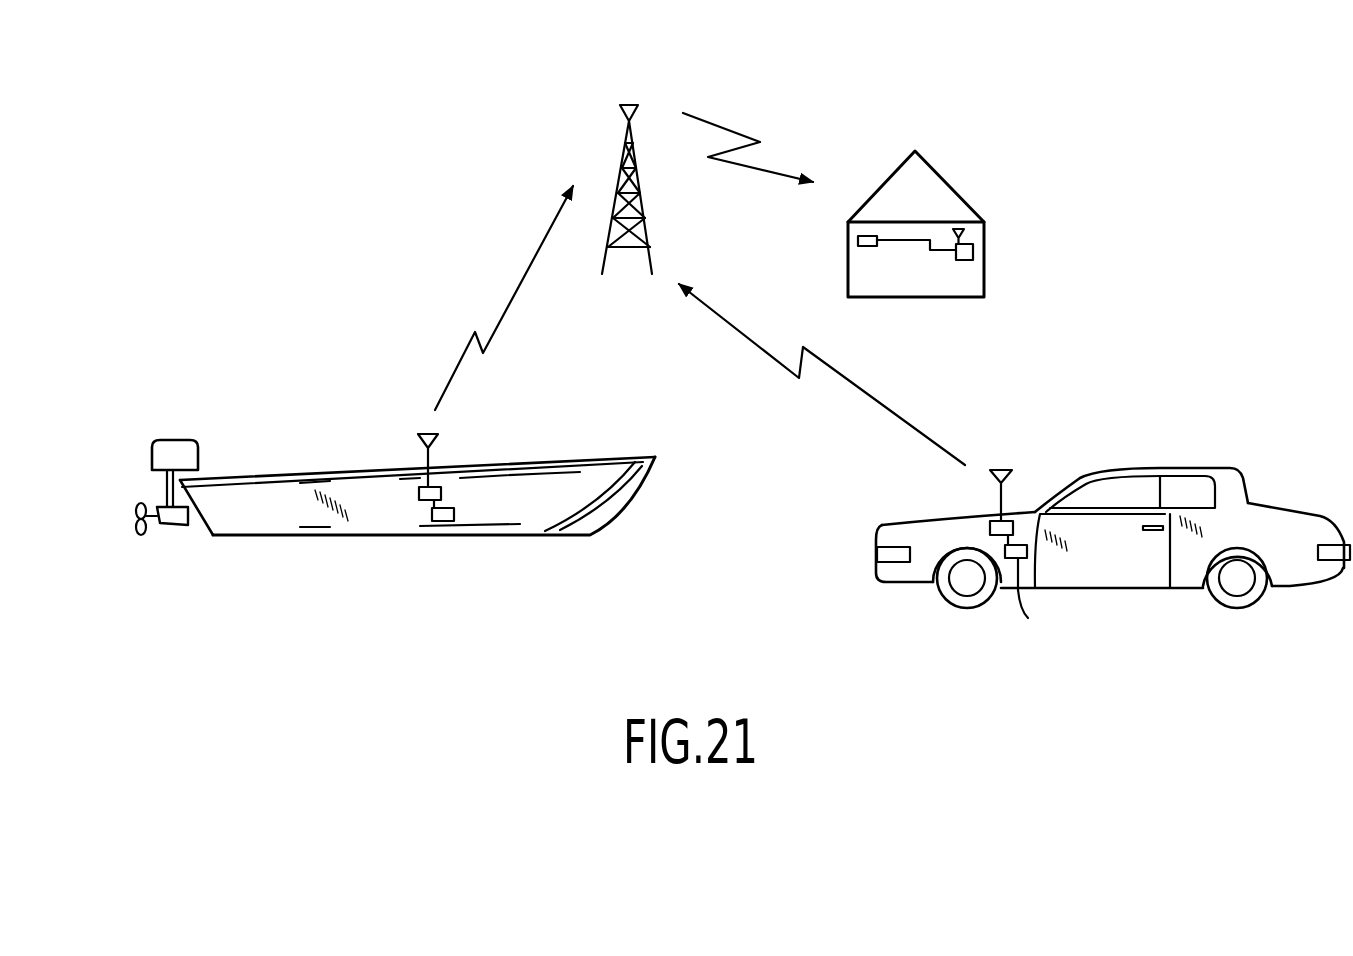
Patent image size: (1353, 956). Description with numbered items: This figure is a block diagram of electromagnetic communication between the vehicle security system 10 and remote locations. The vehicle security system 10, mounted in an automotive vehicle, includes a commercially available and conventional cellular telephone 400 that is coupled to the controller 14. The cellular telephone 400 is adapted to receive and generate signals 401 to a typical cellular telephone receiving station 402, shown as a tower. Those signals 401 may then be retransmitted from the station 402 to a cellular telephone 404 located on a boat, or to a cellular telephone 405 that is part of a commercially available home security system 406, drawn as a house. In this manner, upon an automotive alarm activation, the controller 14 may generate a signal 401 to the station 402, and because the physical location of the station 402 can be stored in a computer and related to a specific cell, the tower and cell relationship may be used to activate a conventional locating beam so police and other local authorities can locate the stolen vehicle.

The vehicle security system 10 is at (1228, 438).
The controller 14 is at (1028, 618).
The cellular telephone 400 is at (1015, 527).
The signals 401 is at (873, 398).
The cellular telephone receiving station 402 is at (580, 111).
The cellular telephone 404 is at (441, 490).
The cellular telephone 405 is at (858, 243).
The home security system 406 is at (984, 248).